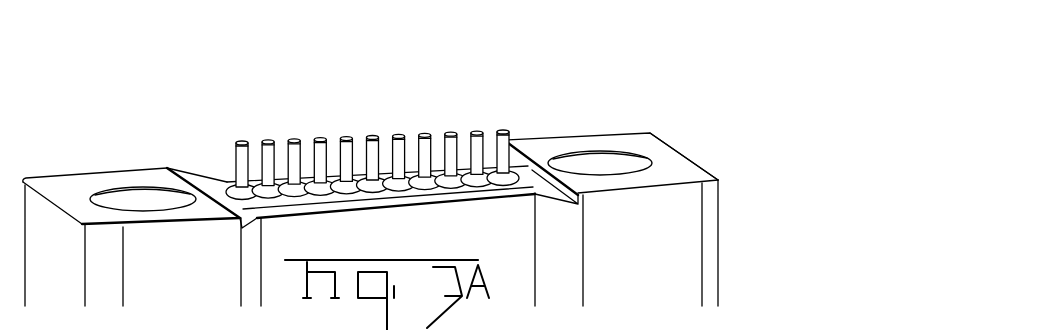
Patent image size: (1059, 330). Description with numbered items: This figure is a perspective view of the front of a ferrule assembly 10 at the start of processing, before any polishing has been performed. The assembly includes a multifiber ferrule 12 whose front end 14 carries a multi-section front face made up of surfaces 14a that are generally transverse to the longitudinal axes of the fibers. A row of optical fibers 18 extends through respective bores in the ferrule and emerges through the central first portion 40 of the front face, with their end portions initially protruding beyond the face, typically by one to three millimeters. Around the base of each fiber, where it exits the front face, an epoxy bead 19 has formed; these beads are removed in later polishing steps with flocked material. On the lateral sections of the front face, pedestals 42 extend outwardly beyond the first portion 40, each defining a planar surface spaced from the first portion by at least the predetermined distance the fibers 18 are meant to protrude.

The ferrule assembly 10 is at (708, 157).
The multifiber ferrule 12 is at (682, 235).
The front end 14 is at (653, 130).
The front face surfaces 14a is at (125, 170).
The optical fibers 18 is at (471, 133).
The epoxy beads 19 is at (230, 185).
The first portion of the front face 40 is at (398, 197).
The pedestals 42 is at (68, 175).